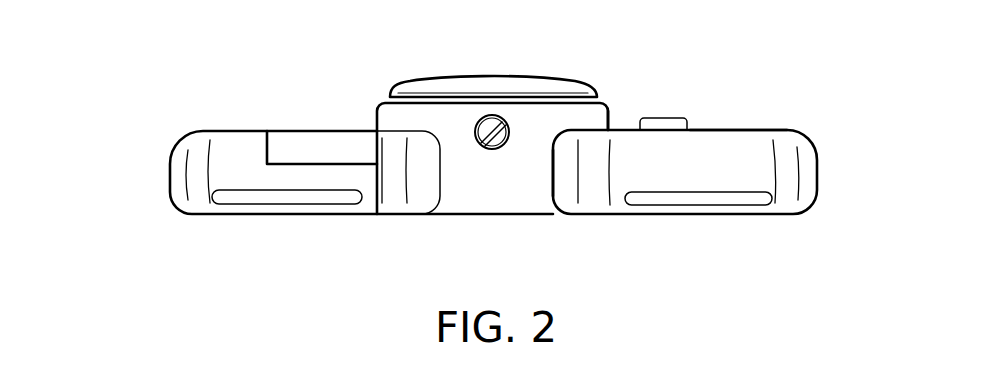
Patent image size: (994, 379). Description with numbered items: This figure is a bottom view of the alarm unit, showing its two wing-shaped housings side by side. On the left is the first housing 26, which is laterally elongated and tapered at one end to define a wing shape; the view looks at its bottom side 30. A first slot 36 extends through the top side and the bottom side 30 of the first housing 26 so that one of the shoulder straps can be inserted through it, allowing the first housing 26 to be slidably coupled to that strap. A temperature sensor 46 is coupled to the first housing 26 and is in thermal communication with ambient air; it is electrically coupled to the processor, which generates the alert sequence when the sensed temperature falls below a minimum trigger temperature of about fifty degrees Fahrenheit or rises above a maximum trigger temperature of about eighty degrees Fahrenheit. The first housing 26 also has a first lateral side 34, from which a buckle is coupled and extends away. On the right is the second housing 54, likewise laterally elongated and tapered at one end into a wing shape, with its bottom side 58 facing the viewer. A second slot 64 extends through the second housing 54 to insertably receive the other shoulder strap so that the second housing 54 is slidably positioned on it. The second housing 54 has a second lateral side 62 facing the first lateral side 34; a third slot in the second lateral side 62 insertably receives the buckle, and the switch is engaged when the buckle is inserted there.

The first housing 26 is at (173, 152).
The bottom side 30 is at (377, 195).
The first lateral side 34 is at (609, 135).
The first slot 36 is at (268, 197).
The temperature sensor 46 is at (506, 121).
The second housing 54 is at (806, 135).
The bottom side 58 is at (747, 142).
The second lateral side 62 is at (553, 177).
The second slot 64 is at (703, 197).